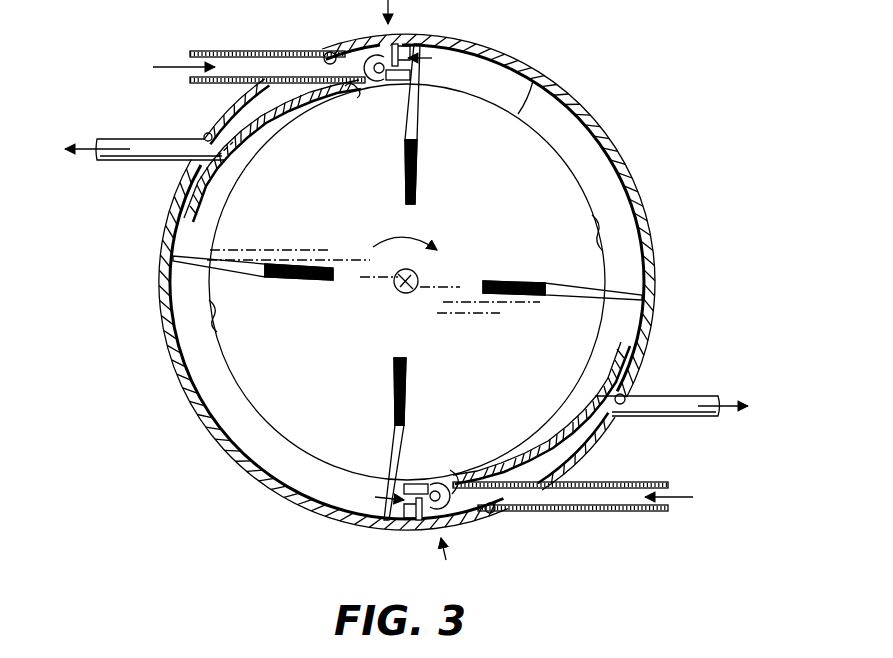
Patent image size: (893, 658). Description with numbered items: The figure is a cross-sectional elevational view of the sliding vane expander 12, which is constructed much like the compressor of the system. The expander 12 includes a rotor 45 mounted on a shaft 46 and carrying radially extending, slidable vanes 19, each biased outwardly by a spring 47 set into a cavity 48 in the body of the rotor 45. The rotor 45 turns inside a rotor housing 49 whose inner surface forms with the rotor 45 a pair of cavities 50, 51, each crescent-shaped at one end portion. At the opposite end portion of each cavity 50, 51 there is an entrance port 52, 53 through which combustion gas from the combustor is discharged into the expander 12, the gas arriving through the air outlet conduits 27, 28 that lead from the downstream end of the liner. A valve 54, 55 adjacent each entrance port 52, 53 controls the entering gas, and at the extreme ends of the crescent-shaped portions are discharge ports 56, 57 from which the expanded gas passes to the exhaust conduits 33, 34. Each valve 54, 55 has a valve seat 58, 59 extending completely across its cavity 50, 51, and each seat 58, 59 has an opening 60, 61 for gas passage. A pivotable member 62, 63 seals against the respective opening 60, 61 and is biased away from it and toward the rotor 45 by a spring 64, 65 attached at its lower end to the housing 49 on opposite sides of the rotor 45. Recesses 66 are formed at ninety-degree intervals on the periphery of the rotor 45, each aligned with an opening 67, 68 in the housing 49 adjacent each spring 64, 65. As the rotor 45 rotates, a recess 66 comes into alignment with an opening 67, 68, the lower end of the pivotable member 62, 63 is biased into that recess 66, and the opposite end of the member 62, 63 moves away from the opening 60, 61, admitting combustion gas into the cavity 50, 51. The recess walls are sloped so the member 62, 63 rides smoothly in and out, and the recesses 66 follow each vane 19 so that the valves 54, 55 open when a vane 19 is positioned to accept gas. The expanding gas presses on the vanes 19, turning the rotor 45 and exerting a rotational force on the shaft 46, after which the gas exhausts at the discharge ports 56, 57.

The sliding vane expander 12 is at (160, 247).
The sliding vanes 19 is at (418, 118).
The air outlet conduit 27 is at (240, 51).
The air outlet conduit 28 is at (632, 512).
The exhaust conduit 33 is at (122, 160).
The exhaust conduit 34 is at (688, 396).
The rotor 45 is at (533, 81).
The shaft 46 is at (412, 295).
The springs 47 is at (419, 170).
The cavities 48 is at (417, 203).
The rotor housing 49 is at (195, 188).
The cavity 50 is at (560, 122).
The cavity 51 is at (235, 413).
The entrance port 52 is at (327, 53).
The entrance port 53 is at (492, 513).
The valve 54 is at (374, 12).
The valve 55 is at (434, 562).
The discharge port 56 is at (624, 396).
The discharge port 57 is at (208, 133).
The valve seat 58 is at (400, 44).
The valve seat 59 is at (410, 520).
The opening 60 is at (436, 62).
The opening 61 is at (375, 497).
The pivotable member 62 is at (372, 55).
The pivotable member 63 is at (447, 508).
The spring 64 is at (387, 82).
The spring 65 is at (422, 483).
The recesses 66 is at (355, 92).
The opening 67 is at (376, 88).
The opening 68 is at (438, 480).